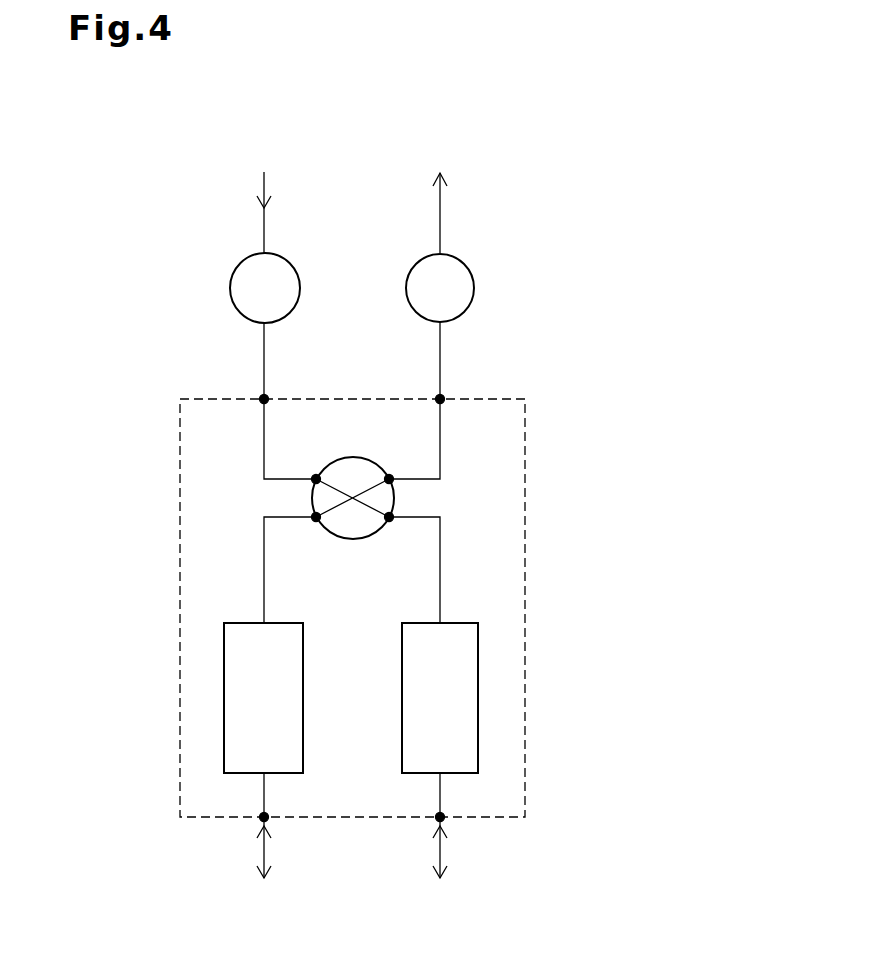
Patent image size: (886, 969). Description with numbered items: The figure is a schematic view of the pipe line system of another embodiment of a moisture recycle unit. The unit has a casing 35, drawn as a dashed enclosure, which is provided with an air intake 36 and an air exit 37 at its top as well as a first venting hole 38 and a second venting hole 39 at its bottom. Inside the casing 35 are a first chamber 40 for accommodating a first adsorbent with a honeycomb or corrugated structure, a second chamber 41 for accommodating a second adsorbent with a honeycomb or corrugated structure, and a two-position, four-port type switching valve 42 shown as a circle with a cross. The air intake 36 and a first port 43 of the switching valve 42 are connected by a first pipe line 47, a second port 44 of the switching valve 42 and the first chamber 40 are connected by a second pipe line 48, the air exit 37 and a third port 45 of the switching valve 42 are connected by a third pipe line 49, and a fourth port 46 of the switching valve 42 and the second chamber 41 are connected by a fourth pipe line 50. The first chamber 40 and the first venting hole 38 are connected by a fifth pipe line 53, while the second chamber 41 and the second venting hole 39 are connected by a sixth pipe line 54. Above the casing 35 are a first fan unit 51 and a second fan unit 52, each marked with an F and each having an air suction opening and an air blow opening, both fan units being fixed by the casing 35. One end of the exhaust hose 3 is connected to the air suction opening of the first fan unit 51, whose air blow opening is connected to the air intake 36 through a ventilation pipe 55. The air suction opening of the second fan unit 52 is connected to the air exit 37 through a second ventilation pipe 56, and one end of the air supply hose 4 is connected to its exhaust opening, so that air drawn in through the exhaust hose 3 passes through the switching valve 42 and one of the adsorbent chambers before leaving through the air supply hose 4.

The exhaust hose 3 is at (264, 190).
The air supply hose 4 is at (440, 195).
The casing 35 is at (197, 398).
The air intake 36 is at (262, 398).
The air exit 37 is at (440, 399).
The first venting hole 38 is at (264, 817).
The second venting hole 39 is at (440, 817).
The first chamber 40 is at (240, 699).
The second chamber 41 is at (460, 690).
The switching valve 42 is at (395, 500).
The first port 43 is at (316, 479).
The second port 44 is at (316, 517).
The third port 45 is at (389, 479).
The fourth port 46 is at (389, 517).
The first pipe line 47 is at (264, 430).
The second pipe line 48 is at (264, 550).
The third pipe line 49 is at (440, 427).
The fourth pipe line 50 is at (440, 565).
The first fan unit 51 is at (300, 288).
The second fan unit 52 is at (468, 263).
The fifth pipe line 53 is at (264, 793).
The sixth pipe line 54 is at (440, 792).
The ventilation pipe 55 is at (264, 359).
The second ventilation pipe 56 is at (440, 355).